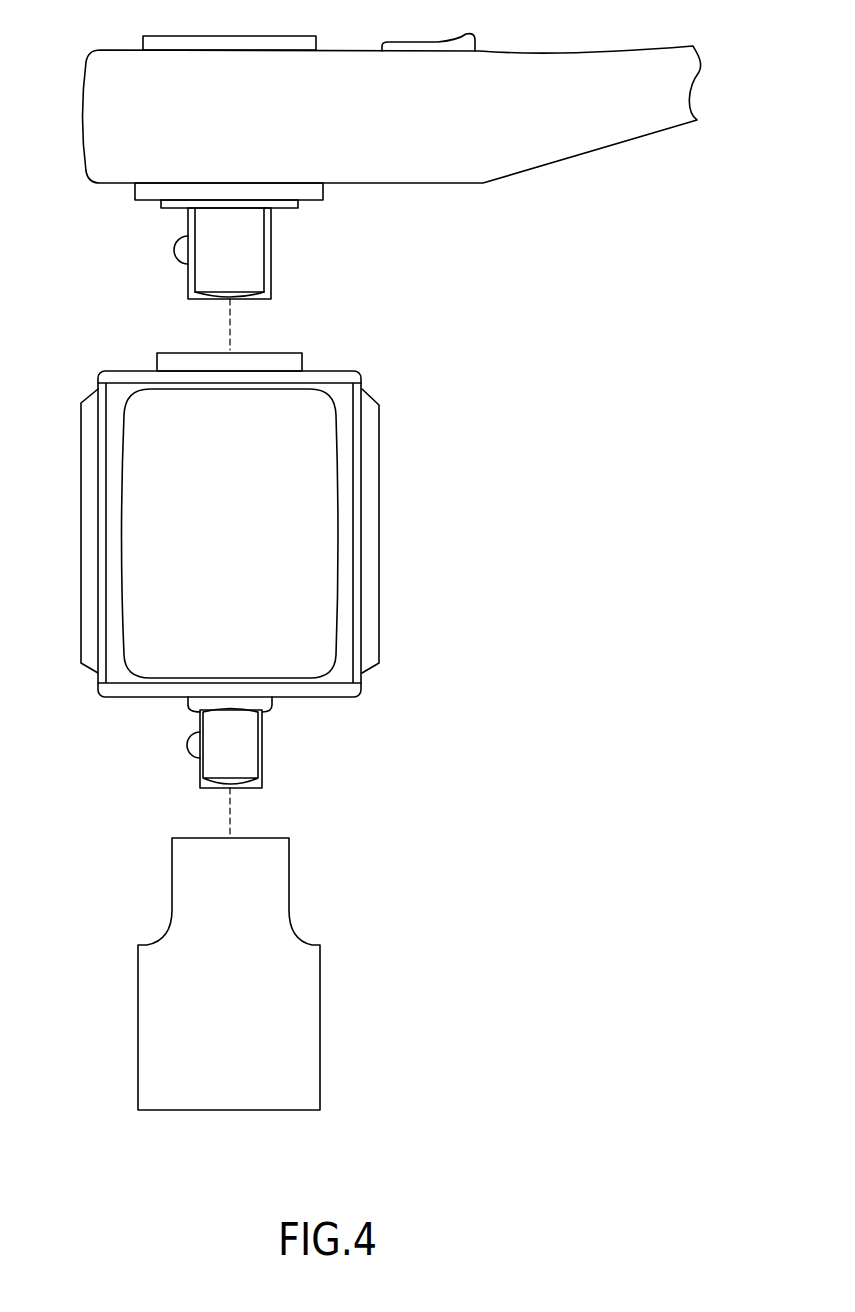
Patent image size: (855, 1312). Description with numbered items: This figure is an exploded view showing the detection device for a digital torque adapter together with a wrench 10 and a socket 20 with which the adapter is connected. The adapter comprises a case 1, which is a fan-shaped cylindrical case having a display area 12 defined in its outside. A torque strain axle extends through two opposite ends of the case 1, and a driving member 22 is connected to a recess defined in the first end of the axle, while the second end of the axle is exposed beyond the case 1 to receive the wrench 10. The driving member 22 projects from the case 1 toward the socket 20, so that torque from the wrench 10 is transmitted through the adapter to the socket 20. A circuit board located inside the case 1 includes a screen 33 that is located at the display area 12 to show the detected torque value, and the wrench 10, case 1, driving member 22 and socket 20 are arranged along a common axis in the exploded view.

The case 1 is at (238, 525).
The wrench 10 is at (492, 170).
The display area 12 is at (116, 540).
The socket 20 is at (315, 1012).
The driving member 22 is at (263, 760).
The screen 33 is at (327, 532).